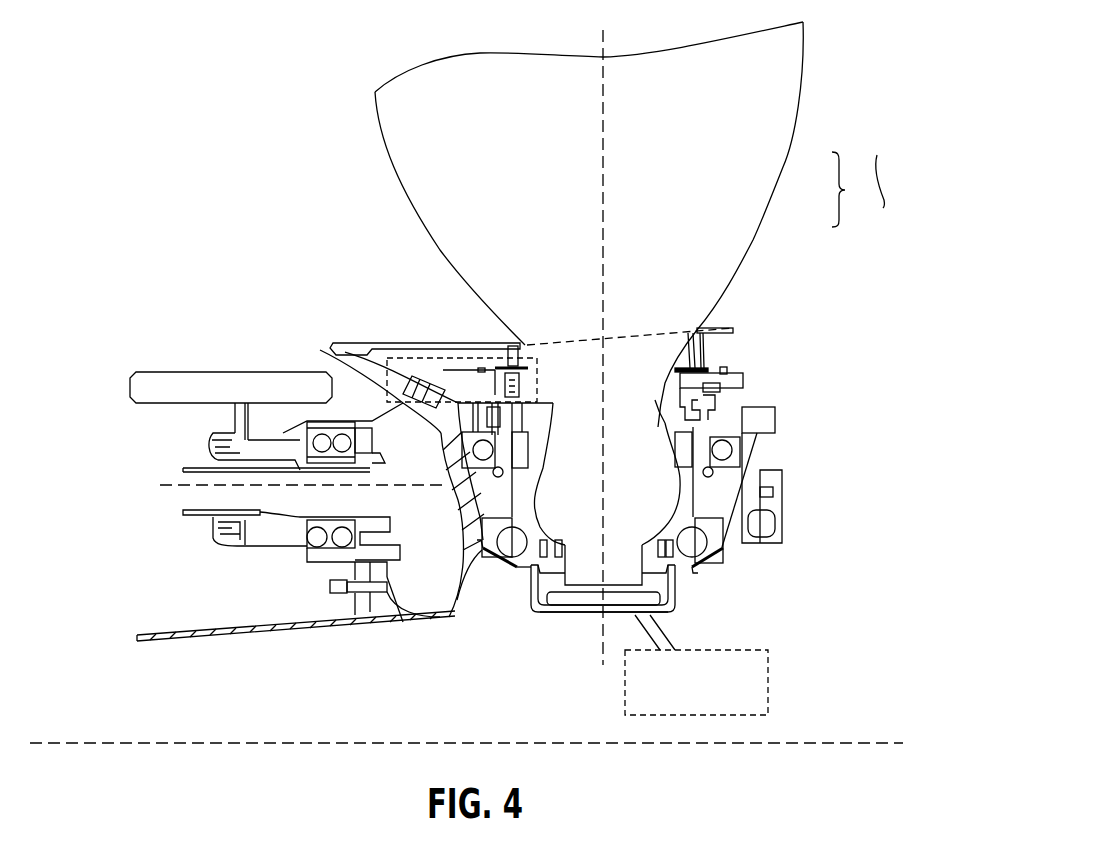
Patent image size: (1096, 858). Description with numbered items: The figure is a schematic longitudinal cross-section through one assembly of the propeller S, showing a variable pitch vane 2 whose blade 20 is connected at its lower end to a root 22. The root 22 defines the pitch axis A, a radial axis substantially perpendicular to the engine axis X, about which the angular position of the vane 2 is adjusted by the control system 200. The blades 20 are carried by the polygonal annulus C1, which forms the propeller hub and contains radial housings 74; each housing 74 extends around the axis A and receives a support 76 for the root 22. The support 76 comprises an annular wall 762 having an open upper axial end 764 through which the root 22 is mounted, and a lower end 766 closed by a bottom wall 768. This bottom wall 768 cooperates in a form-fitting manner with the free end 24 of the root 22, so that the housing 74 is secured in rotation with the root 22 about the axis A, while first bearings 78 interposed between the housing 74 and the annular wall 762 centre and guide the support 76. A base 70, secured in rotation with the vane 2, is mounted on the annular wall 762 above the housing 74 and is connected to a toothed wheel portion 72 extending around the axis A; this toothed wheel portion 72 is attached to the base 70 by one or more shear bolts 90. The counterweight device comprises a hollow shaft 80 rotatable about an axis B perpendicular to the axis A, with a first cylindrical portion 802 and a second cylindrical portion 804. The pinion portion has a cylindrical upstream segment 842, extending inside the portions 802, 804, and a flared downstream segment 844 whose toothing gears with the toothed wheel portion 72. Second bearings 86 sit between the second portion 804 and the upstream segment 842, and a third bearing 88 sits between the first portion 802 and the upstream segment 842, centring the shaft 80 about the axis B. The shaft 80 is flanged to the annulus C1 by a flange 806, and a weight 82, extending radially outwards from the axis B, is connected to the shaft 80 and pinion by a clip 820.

The pitch axis A is at (603, 178).
The propeller S is at (897, 175).
The variable pitch vane 2 is at (847, 189).
The blade 20 is at (705, 245).
The root 22 is at (647, 378).
The upper axial end 764 is at (723, 328).
The housing 74 is at (667, 417).
The annular wall 762 is at (692, 425).
The first bearings 78 is at (692, 542).
The free end 24 is at (625, 578).
The lower end 766 is at (665, 598).
The support 76 is at (563, 617).
The bottom wall 768 is at (640, 612).
The control system 200 is at (716, 697).
The axis X is at (850, 742).
The axis B is at (163, 487).
The polygonal annulus C1 is at (455, 607).
The base 70 is at (480, 364).
The toothed wheel portion 72 is at (435, 378).
The shear bolt 90 is at (496, 395).
The second cylindrical portion 804 is at (347, 427).
The downstream segment 844 is at (382, 433).
The weight 82 is at (150, 392).
The first cylindrical portion 802 is at (300, 412).
The clip 820 is at (212, 434).
The shaft 80 is at (268, 440).
The third bearing 88 is at (248, 538).
The upstream segment 842 is at (253, 512).
The second bearings 86 is at (342, 548).
The flange 806 is at (348, 598).